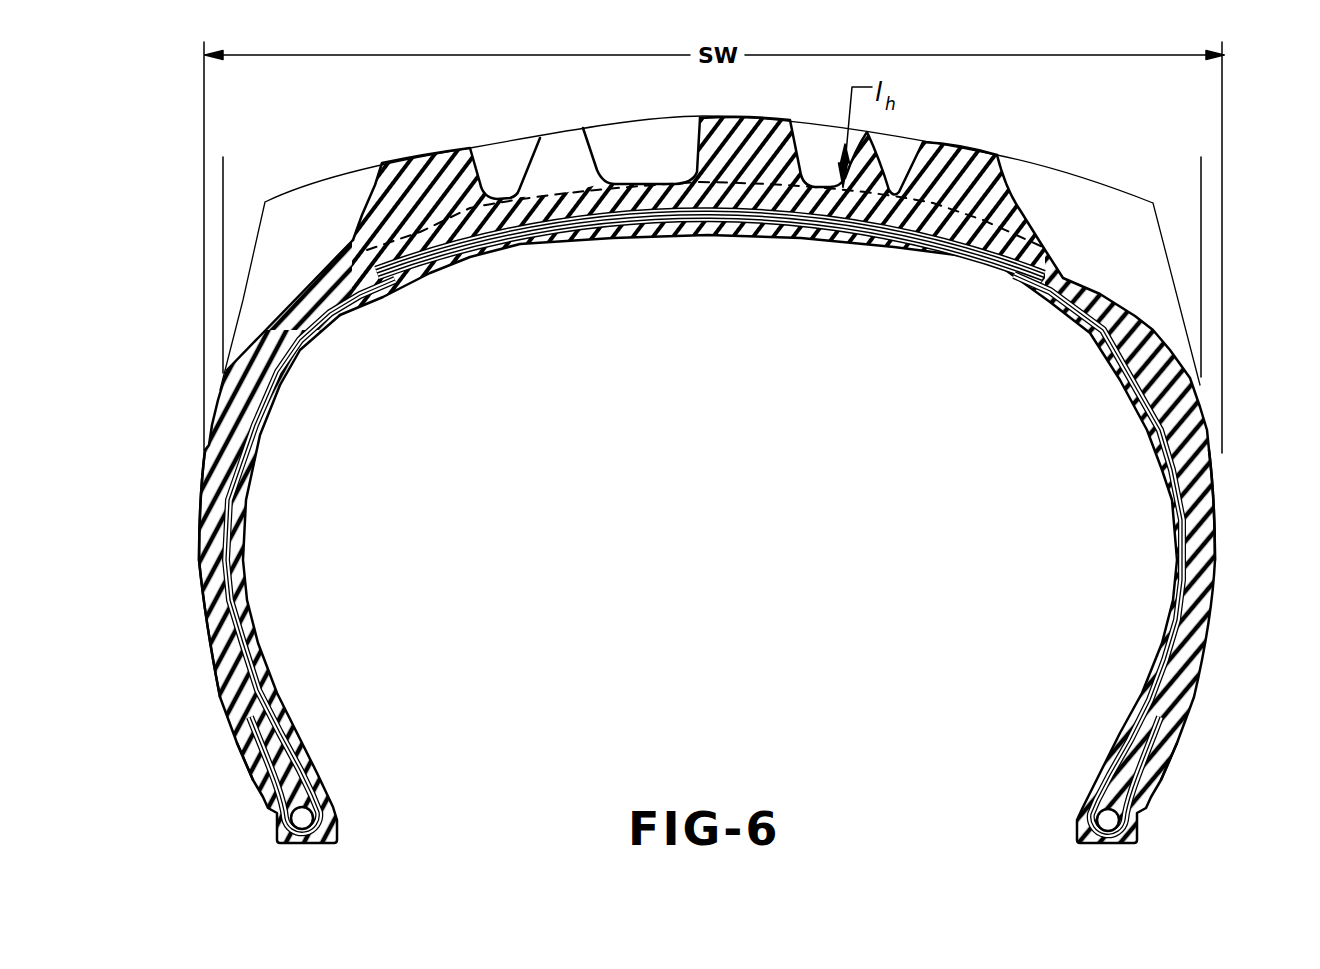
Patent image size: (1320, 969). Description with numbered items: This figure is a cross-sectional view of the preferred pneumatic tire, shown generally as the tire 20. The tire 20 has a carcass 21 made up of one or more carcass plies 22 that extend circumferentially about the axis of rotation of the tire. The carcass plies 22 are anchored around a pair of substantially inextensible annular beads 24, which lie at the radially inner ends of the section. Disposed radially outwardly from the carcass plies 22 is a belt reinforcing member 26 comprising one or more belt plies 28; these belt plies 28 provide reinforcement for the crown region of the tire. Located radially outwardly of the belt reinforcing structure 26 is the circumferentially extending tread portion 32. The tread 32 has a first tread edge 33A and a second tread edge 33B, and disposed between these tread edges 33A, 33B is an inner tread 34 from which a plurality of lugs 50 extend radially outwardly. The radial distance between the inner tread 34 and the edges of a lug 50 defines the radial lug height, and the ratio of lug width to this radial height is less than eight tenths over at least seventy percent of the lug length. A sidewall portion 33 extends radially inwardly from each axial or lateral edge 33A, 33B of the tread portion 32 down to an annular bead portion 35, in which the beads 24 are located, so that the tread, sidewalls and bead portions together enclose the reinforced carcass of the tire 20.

The tire 20 is at (1113, 172).
The carcass 21 is at (210, 550).
The carcass plies 22 is at (258, 688).
The annular beads 24 is at (304, 818).
The belt reinforcing member 26 is at (504, 221).
The belt plies 28 is at (578, 242).
The tread portion 32 is at (730, 115).
The sidewall portion 33 is at (200, 503).
The first tread edge 33A is at (1203, 203).
The second tread edge 33B is at (223, 204).
The inner tread 34 is at (575, 210).
The bead portion 35 is at (253, 764).
The lugs 50 is at (428, 150).